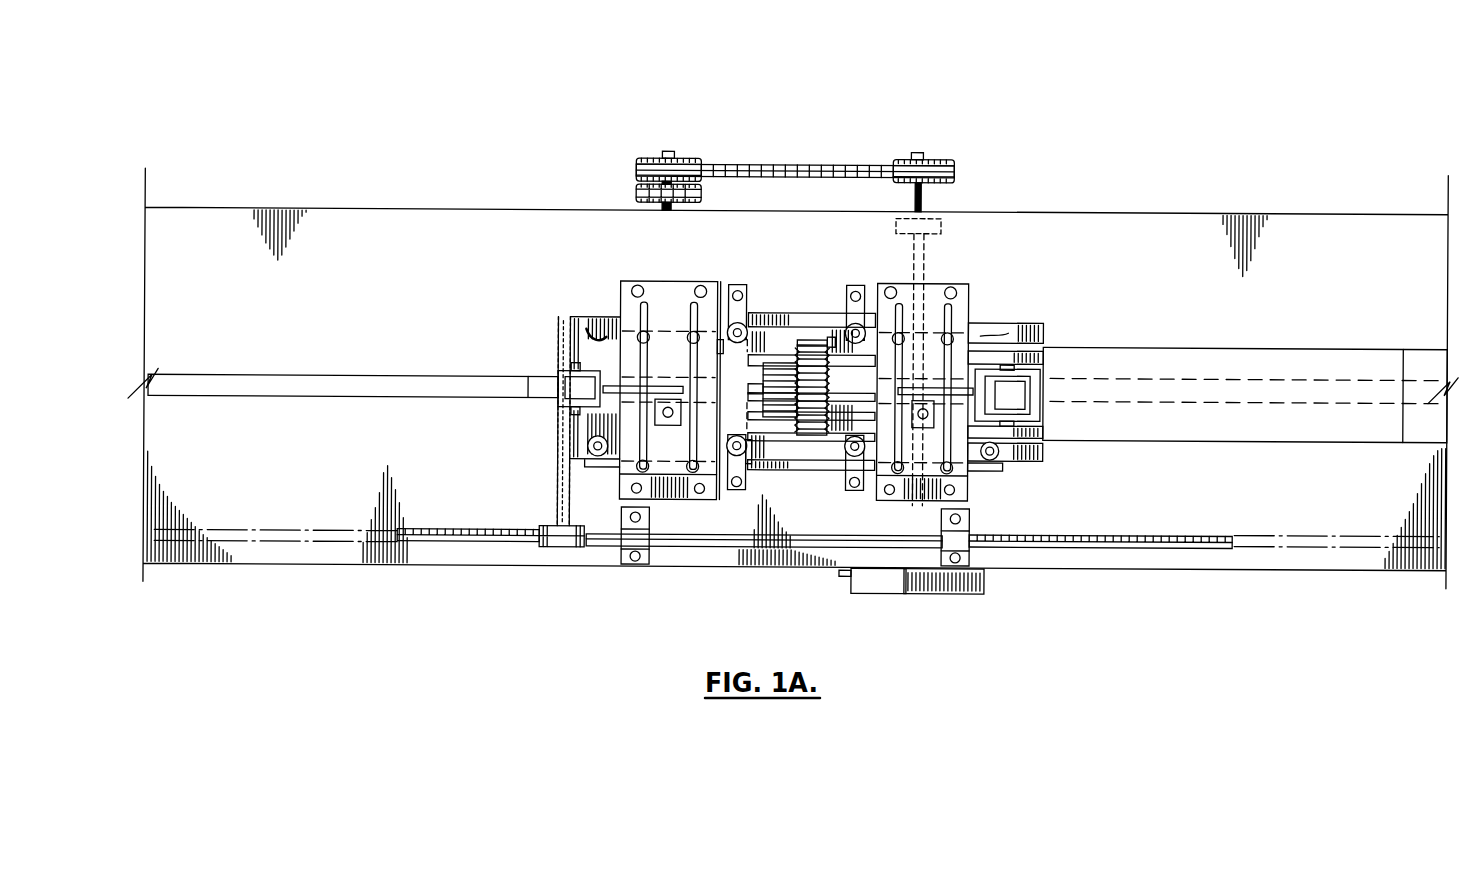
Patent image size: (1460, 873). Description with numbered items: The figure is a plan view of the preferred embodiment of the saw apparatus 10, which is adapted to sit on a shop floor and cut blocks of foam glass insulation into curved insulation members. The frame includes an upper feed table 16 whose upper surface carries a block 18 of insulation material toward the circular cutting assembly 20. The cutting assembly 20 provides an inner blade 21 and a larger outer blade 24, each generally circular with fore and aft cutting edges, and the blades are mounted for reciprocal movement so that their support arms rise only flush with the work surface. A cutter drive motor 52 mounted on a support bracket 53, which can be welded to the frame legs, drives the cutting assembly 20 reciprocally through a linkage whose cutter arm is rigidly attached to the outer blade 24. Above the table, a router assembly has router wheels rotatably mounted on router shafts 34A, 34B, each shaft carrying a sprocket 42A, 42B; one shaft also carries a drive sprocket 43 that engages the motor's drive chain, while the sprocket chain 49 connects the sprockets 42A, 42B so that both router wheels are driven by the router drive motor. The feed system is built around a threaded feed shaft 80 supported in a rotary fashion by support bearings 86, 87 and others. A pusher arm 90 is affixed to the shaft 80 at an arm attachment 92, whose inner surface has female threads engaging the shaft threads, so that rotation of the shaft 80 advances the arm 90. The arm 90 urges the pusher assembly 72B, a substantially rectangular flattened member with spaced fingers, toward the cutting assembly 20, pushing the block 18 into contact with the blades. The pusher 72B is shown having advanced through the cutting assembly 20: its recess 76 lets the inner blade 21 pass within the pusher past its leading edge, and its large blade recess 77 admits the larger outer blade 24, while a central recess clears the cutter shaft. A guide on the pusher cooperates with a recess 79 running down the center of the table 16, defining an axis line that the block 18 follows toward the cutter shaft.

The saw apparatus 10 is at (1118, 68).
The upper feed table 16 is at (452, 302).
The block 18 is at (1112, 420).
The circular cutting assembly 20 is at (782, 346).
The inner blade 21 is at (752, 466).
The outer blade 24 is at (822, 445).
The router shaft 34A is at (672, 208).
The router shaft 34B is at (924, 196).
The sprocket 42A is at (666, 159).
The sprocket 42B is at (921, 159).
The drive sprocket 43 is at (635, 194).
The sprocket chain 49 is at (785, 165).
The cutter drive motor 52 is at (930, 582).
The support bracket 53 is at (865, 582).
The pusher assembly 72B is at (592, 324).
The recess 76 is at (760, 409).
The large blade recess 77 is at (832, 338).
The recess 79 is at (385, 376).
The threaded feed shaft 80 is at (512, 546).
The support bearing 86 is at (638, 538).
The support bearing 87 is at (982, 544).
The pusher arm 90 is at (566, 492).
The arm attachment 92 is at (563, 542).